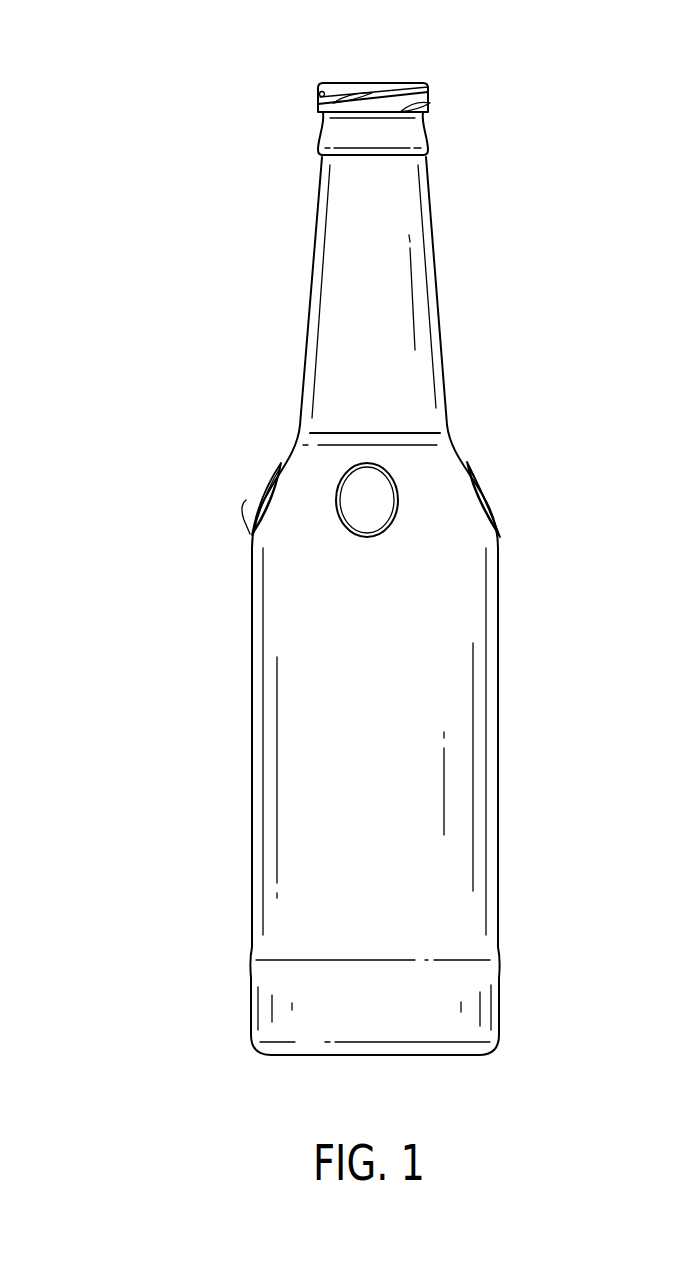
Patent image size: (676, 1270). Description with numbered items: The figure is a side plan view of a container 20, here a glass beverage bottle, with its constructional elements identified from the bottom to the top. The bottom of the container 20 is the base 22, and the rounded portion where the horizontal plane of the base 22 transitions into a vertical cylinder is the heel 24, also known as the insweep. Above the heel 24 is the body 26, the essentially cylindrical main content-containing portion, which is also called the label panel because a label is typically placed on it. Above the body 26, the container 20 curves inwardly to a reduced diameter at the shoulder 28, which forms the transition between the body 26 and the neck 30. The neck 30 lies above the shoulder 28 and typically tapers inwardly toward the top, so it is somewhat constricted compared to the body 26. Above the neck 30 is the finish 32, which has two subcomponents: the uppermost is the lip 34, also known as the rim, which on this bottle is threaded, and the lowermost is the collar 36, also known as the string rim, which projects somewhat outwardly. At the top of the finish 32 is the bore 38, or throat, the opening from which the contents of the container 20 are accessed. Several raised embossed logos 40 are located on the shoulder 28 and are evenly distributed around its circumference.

The container 20 is at (141, 967).
The base 22 is at (435, 1056).
The heel 24 is at (266, 1055).
The body 26 is at (238, 1021).
The shoulder 28 is at (285, 433).
The neck 30 is at (311, 159).
The finish 32 is at (310, 82).
The lip 34 is at (430, 94).
The collar 36 is at (433, 138).
The bore 38 is at (412, 72).
The raised embossed logos 40 is at (485, 483).